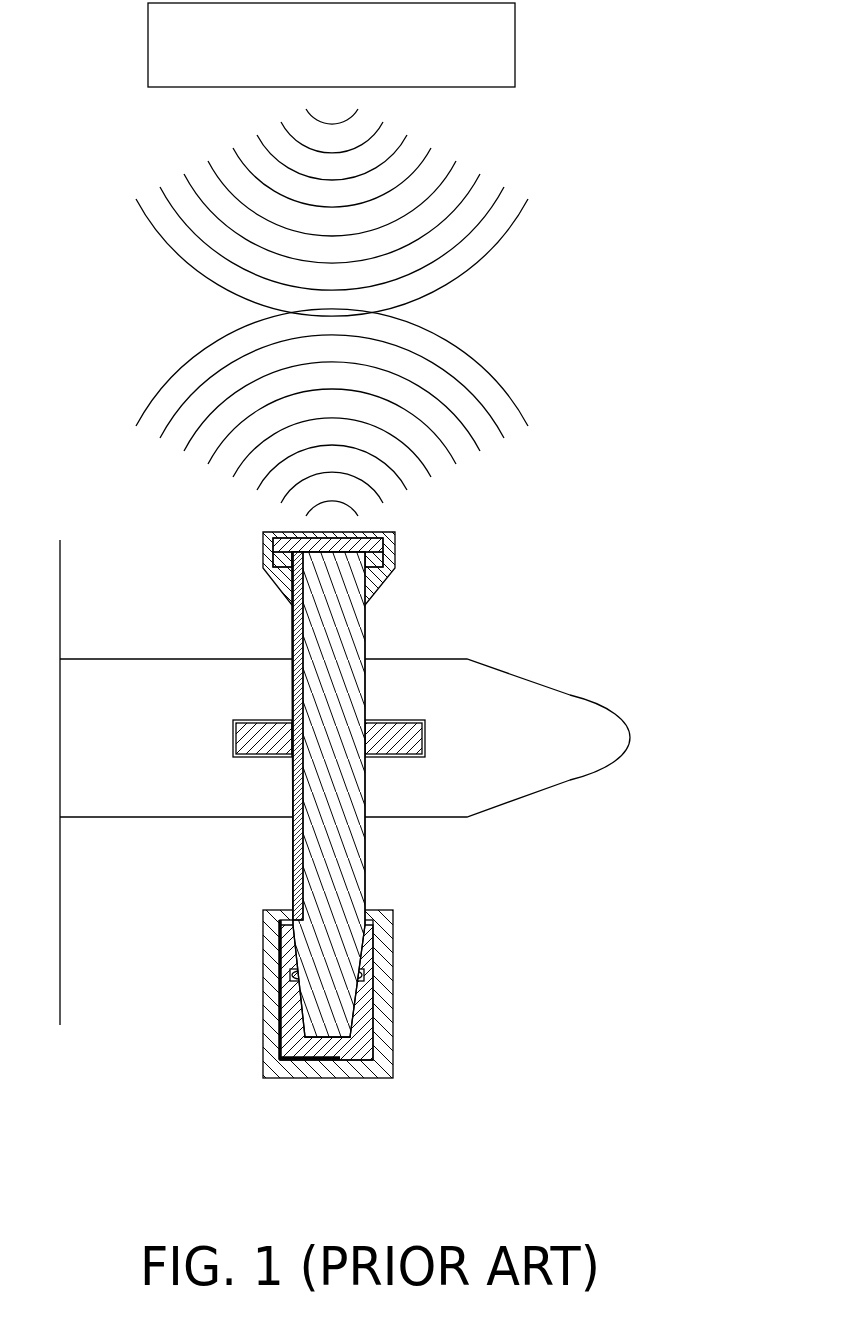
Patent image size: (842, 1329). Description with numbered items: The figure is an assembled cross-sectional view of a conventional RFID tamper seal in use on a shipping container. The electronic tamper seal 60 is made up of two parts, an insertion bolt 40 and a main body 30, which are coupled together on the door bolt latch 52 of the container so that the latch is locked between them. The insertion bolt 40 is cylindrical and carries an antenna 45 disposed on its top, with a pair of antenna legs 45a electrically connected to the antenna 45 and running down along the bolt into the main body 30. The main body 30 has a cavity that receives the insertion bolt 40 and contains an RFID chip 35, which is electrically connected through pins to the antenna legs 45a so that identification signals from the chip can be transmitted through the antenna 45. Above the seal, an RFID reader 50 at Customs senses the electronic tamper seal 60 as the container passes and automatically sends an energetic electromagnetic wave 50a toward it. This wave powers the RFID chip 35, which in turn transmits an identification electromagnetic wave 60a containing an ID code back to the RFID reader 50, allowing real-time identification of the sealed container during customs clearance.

The main body 30 is at (397, 1008).
The RFID chip 35 is at (345, 1078).
The insertion bolt 40 is at (400, 545).
The antenna 45 is at (283, 544).
The antenna legs 45a is at (297, 640).
The RFID reader 50 is at (497, 45).
The energetic electromagnetic wave 50a is at (470, 167).
The door bolt latch 52 is at (415, 652).
The electronic tamper seal 60 is at (382, 867).
The identification electromagnetic wave 60a is at (488, 442).